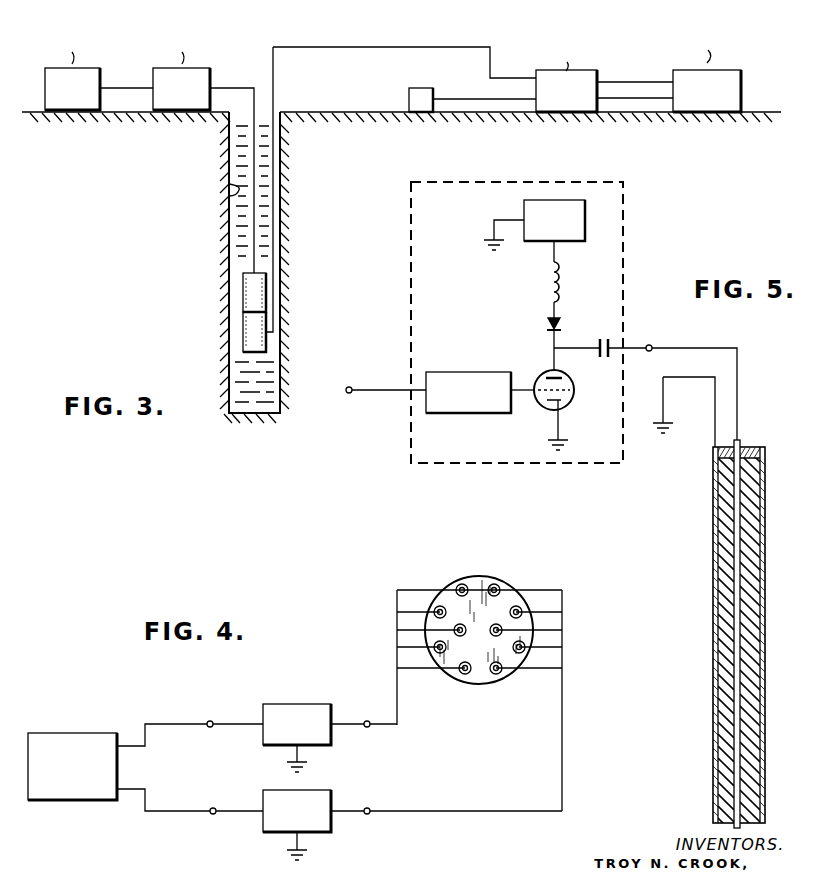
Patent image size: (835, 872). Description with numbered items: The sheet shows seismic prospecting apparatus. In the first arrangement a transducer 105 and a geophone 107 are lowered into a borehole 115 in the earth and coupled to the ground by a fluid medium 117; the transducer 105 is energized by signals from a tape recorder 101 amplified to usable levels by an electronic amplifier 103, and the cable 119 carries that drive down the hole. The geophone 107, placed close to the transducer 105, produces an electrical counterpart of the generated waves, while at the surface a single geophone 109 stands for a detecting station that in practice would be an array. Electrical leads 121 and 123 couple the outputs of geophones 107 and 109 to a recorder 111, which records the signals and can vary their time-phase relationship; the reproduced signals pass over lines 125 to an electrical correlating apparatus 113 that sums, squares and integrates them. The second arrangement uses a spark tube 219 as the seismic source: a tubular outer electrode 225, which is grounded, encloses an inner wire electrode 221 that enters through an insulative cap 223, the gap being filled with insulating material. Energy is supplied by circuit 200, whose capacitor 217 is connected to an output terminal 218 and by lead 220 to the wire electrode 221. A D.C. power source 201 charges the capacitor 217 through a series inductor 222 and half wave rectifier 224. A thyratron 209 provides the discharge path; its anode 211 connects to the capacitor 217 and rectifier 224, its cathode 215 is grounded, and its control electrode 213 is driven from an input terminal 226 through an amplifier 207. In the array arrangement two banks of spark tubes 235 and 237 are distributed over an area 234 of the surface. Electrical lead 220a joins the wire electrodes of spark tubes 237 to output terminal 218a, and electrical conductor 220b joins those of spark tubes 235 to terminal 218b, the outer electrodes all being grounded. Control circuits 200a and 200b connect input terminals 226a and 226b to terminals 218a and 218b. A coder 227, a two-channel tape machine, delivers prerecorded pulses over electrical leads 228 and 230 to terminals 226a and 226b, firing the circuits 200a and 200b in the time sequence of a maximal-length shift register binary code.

In FIG. 3, the tape recorder 101 is at (71, 66).
In FIG. 3, the electronic amplifier 103 is at (182, 74).
In FIG. 3, the transducer 105 is at (250, 290).
In FIG. 3, the geophone 107 is at (250, 335).
In FIG. 3, the geophone 109 is at (415, 94).
In FIG. 3, the recorder 111 is at (565, 67).
In FIG. 3, the electrical correlating apparatus 113 is at (710, 74).
In FIG. 3, the borehole 115 is at (229, 190).
In FIG. 3, the fluid medium 117 is at (265, 196).
In FIG. 3, the cable to geophone 119 is at (254, 145).
In FIG. 3, the electrical lead 121 is at (273, 58).
In FIG. 3, the electrical lead 123 is at (472, 99).
In FIG. 3, the lines 125 is at (643, 98).
In FIG. 5, the circuit 200 is at (628, 220).
In FIG. 5, the D.C. power source 201 is at (524, 204).
In FIG. 5, the amplifier 207 is at (470, 372).
In FIG. 5, the thyratron 209 is at (575, 390).
In FIG. 5, the anode 211 is at (545, 376).
In FIG. 5, the control electrode 213 is at (540, 400).
In FIG. 5, the cathode 215 is at (562, 402).
In FIG. 5, the capacitor 217 is at (604, 338).
In FIG. 5, the output terminal 218 is at (649, 345).
In FIG. 5, the spark tube 219 is at (728, 627).
In FIG. 5, the electrical lead 220 is at (737, 396).
In FIG. 5, the wire electrode 221 is at (734, 541).
In FIG. 5, the inductor 222 is at (562, 276).
In FIG. 5, the insulative cap 223 is at (756, 454).
In FIG. 5, the half wave rectifier 224 is at (548, 322).
In FIG. 5, the outer electrode 225 is at (762, 650).
In FIG. 5, the input terminal 226 is at (349, 393).
In FIG. 4, the coder 227 is at (70, 742).
In FIG. 4, the electrical lead 228 is at (170, 811).
In FIG. 4, the electrical lead 230 is at (170, 724).
In FIG. 4, the input terminal 226a is at (214, 814).
In FIG. 4, the input terminal 226b is at (211, 721).
In FIG. 4, the control circuit 200a is at (297, 825).
In FIG. 4, the control circuit 200b is at (297, 738).
In FIG. 4, the output terminal 218a is at (367, 814).
In FIG. 4, the output terminal 218b is at (367, 727).
In FIG. 4, the electrical lead 220a is at (562, 768).
In FIG. 4, the electrical conductor 220b is at (397, 640).
In FIG. 4, the area 234 is at (479, 576).
In FIG. 4, the spark tubes 235 is at (436, 606).
In FIG. 4, the spark tubes 237 is at (520, 606).